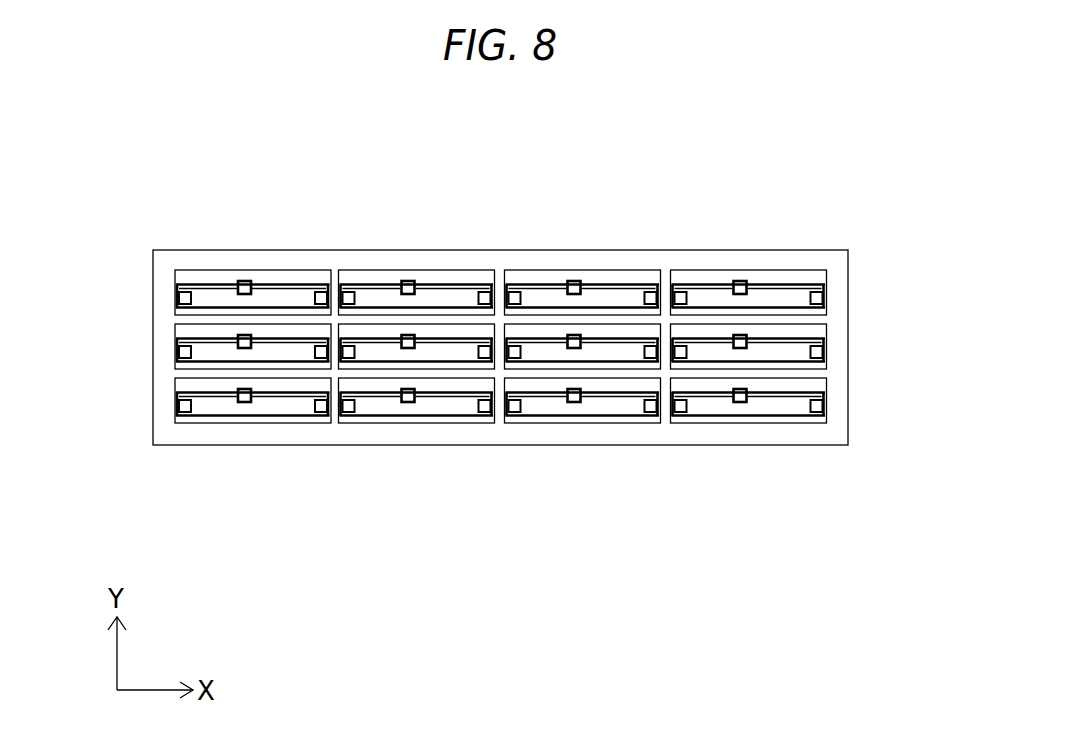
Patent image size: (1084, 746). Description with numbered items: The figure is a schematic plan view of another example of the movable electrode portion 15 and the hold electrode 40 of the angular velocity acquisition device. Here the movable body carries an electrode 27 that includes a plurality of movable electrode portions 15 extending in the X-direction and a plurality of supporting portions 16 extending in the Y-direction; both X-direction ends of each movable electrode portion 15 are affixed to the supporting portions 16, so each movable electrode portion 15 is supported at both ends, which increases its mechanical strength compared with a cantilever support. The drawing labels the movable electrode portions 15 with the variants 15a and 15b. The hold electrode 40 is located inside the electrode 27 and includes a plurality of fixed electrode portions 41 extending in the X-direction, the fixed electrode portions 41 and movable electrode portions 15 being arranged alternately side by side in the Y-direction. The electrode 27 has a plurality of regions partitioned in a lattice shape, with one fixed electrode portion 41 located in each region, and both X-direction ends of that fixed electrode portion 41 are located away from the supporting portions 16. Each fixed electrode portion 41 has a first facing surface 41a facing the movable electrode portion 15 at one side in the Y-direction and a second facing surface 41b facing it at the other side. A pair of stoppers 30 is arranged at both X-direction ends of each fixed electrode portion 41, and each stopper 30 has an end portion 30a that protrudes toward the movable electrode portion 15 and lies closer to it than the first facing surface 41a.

The movable electrode portion 15 is at (501, 363).
The pixel element (first type) 15a is at (423, 265).
The pixel element (second type) 15b is at (365, 318).
The supporting portion 16 is at (335, 332).
The electrode 27 is at (653, 248).
The stopper 30 is at (495, 373).
The end portion 30a is at (518, 412).
The hold electrode 40 is at (773, 281).
The fixed electrode portion 41 is at (500, 332).
The first facing surface 41a is at (390, 408).
The second facing surface 41b is at (450, 388).